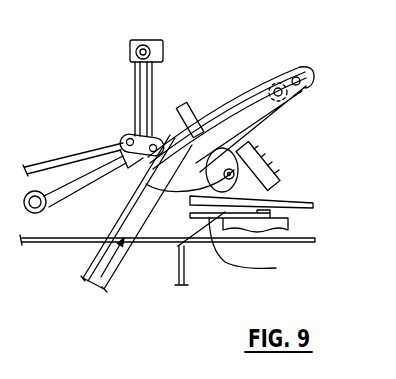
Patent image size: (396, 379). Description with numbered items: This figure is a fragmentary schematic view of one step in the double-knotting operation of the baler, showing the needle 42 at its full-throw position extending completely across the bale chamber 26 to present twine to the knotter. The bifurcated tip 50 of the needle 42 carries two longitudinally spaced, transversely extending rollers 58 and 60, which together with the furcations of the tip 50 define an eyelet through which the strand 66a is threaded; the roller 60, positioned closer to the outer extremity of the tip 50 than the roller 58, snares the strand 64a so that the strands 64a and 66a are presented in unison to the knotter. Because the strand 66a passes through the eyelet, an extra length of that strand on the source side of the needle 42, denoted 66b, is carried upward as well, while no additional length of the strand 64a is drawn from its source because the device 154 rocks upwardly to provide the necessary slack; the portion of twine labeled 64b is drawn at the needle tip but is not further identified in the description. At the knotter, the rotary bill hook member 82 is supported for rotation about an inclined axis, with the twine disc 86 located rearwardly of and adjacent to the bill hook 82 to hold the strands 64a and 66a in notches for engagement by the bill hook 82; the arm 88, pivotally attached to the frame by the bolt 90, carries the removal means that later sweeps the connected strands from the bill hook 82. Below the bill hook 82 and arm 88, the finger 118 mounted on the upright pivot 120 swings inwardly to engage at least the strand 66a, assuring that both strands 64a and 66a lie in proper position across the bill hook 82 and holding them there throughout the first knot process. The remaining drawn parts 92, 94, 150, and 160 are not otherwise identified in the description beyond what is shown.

The bale chamber 26 is at (313, 247).
The needle 42 is at (87, 293).
The tip 50 is at (318, 63).
The roller 58 is at (263, 72).
The roller 60 is at (313, 84).
The strand 64a is at (320, 198).
The upper jaw 64b is at (303, 90).
The strand 66a is at (177, 268).
The extra length of strand 66b is at (87, 268).
The bill hook member 82 is at (121, 148).
The twine disc 86 is at (266, 148).
The arm 88 is at (196, 101).
The bolt 90 is at (178, 128).
The wire 92 is at (196, 290).
The threaded member 94 is at (290, 193).
The finger 118 is at (257, 249).
The upright pivot 120 is at (290, 218).
The pivot ring 150 is at (34, 198).
The device 154 is at (114, 190).
The actuator 160 is at (128, 54).